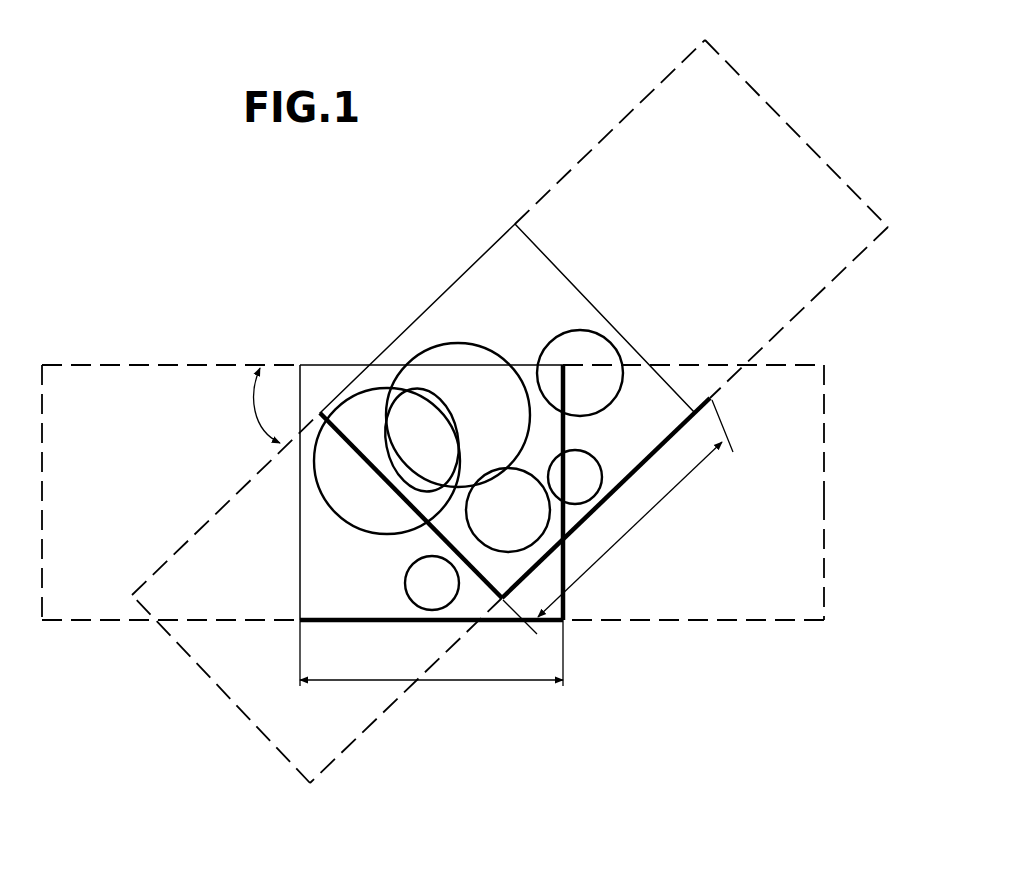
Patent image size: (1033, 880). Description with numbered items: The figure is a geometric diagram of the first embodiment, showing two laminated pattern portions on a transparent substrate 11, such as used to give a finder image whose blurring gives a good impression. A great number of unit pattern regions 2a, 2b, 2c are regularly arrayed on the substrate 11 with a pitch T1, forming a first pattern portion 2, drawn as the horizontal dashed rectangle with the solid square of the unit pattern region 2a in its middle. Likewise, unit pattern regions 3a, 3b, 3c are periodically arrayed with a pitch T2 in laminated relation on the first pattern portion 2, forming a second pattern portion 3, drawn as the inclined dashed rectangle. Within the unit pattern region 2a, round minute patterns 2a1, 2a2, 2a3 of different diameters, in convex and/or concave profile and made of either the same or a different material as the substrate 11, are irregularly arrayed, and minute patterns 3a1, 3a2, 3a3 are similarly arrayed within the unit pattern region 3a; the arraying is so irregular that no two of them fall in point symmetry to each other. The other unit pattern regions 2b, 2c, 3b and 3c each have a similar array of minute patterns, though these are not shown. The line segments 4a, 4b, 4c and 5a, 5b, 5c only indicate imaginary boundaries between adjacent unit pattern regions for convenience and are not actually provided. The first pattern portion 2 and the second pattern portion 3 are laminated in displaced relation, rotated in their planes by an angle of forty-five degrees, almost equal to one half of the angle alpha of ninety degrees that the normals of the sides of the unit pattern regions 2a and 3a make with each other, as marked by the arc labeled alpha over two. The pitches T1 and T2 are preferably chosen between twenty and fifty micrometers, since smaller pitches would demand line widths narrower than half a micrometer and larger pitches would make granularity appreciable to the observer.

The first pattern portion 2 is at (825, 402).
The unit pattern region 2a is at (312, 370).
The unit pattern region 2b is at (824, 365).
The unit pattern region 2c is at (99, 367).
The minute pattern 2a1 is at (333, 483).
The minute pattern 2a2 is at (417, 569).
The minute pattern 2a3 is at (535, 523).
The second pattern portion 3 is at (675, 70).
The unit pattern region 3a is at (463, 290).
The unit pattern region 3b is at (580, 158).
The unit pattern region 3c is at (332, 738).
The minute pattern 3a1 is at (417, 358).
The minute pattern 3a2 is at (590, 472).
The minute pattern 3a3 is at (600, 346).
The line segment 4a is at (565, 570).
The line segment 4b is at (825, 595).
The line segment 4c is at (285, 596).
The line segment 5a is at (672, 386).
The line segment 5b is at (837, 174).
The line segment 5c is at (500, 603).
The transparent substrate 11 is at (825, 478).
The pitch T1 is at (431, 668).
The pitch T2 is at (618, 517).